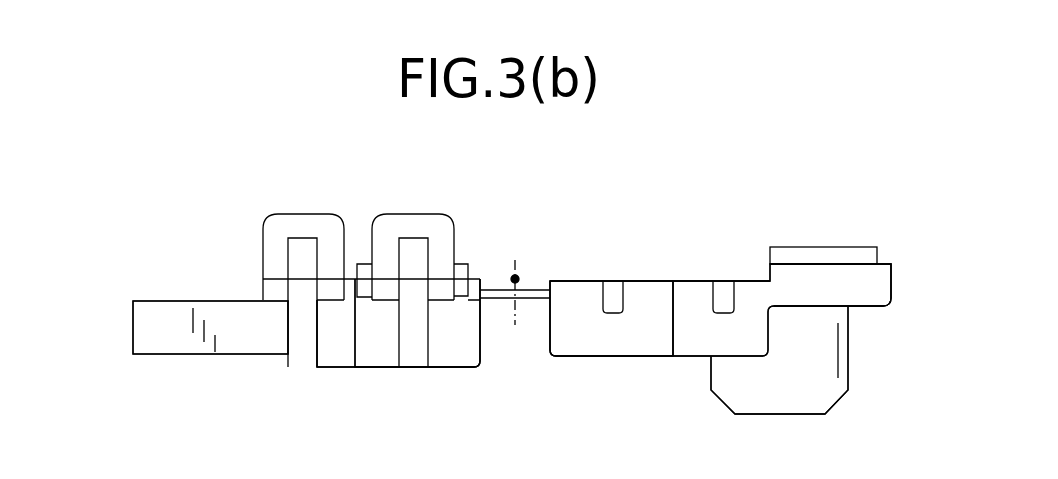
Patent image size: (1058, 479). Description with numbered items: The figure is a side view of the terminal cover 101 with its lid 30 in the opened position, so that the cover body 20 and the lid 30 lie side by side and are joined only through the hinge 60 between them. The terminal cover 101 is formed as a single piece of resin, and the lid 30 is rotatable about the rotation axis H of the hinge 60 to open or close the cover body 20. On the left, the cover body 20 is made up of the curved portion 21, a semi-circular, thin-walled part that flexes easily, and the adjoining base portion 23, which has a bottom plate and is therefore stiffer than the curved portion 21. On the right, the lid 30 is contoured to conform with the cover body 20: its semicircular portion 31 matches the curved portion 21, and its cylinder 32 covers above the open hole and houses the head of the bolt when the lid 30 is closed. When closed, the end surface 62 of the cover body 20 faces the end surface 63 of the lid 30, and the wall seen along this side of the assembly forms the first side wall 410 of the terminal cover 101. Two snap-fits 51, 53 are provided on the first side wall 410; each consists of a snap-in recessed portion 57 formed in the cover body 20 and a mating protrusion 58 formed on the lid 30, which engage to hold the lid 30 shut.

The terminal cover 101 is at (834, 205).
The cover body 20 is at (264, 357).
The curved portion 21 is at (170, 330).
The base portion 23 is at (380, 369).
The lid 30 is at (670, 358).
The semicircular portion 31 is at (868, 281).
The cylinder 32 is at (823, 360).
The first side wall 410 is at (450, 353).
The snap-fit 51 is at (257, 224).
The snap-fit 53 is at (463, 217).
The snap-in recessed portion 57 is at (305, 228).
The protrusion 58 is at (613, 298).
The hinge 60 is at (499, 299).
The end surface 62 is at (351, 279).
The end surface 63 is at (652, 280).
The rotation axis H is at (520, 279).